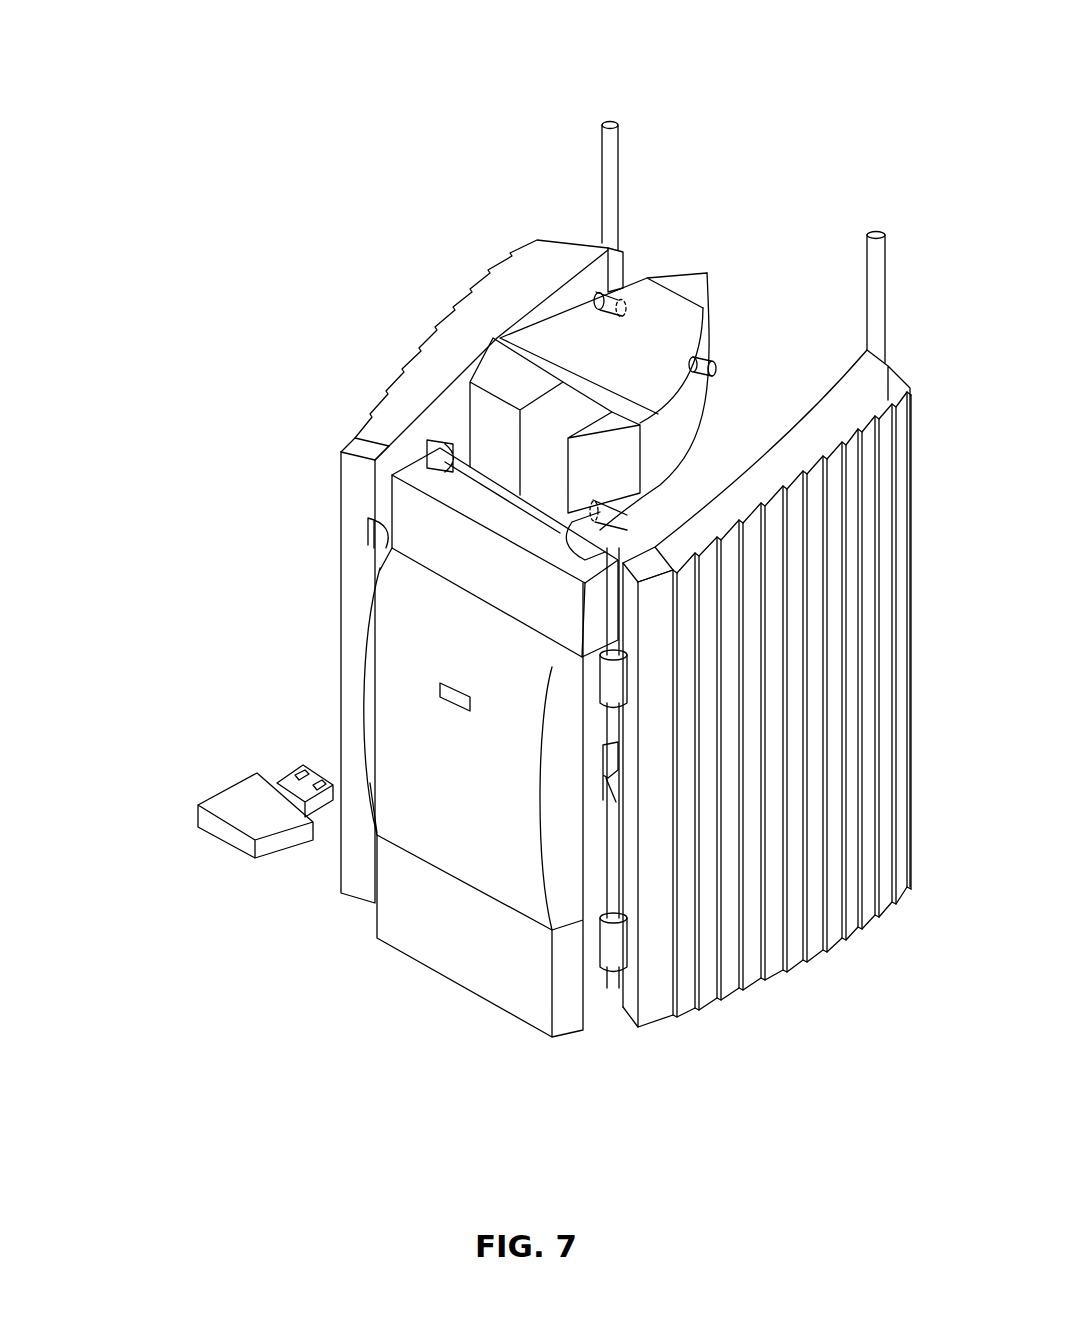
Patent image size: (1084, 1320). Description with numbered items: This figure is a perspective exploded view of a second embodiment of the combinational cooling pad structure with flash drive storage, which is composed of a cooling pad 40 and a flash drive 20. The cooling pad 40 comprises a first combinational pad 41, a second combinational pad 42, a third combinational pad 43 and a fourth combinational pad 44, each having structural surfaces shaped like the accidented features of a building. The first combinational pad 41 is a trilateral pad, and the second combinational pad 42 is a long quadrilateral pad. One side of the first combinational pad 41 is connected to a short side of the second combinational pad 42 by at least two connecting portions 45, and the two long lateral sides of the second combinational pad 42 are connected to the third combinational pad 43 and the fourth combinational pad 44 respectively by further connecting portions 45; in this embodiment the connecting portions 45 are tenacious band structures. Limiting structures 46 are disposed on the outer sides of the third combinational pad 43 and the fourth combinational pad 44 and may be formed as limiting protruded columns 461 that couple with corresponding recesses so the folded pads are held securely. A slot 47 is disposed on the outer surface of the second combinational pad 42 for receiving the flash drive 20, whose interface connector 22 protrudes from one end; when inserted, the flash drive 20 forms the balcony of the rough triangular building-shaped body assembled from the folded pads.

The flash drive 20 is at (232, 815).
The interface connector 22 is at (292, 783).
The cooling pad 40 is at (688, 152).
The first combinational pad 41 is at (702, 337).
The second combinational pad 42 is at (570, 1037).
The third combinational pad 43 is at (754, 458).
The fourth combinational pad 44 is at (568, 258).
The connecting portions 45 is at (378, 553).
The limiting structures 46 is at (613, 768).
The limiting protruded columns 461 is at (712, 370).
The slot 47 is at (443, 690).